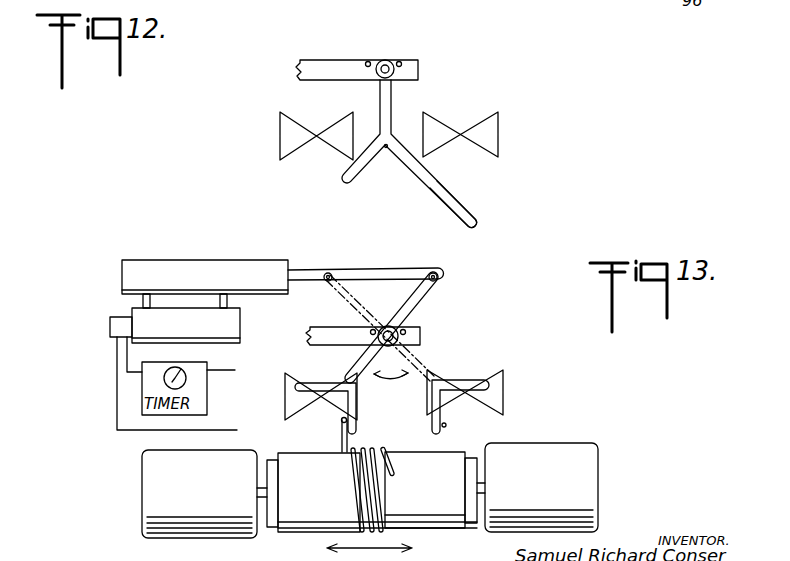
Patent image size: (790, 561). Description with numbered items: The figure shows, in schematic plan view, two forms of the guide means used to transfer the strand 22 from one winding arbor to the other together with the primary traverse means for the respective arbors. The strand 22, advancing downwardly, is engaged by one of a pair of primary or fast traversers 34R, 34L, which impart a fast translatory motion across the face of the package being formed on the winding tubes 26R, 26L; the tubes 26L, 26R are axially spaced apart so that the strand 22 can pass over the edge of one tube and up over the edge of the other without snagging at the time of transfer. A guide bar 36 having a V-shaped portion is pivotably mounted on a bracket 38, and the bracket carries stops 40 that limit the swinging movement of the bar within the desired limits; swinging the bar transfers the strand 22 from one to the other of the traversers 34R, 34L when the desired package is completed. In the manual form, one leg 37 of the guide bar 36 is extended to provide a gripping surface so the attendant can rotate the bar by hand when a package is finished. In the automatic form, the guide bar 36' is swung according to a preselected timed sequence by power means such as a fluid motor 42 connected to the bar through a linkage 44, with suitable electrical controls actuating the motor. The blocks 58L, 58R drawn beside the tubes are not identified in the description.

In FIG. 12, the strand 22 is at (386, 149).
In FIG. 13, the strand 22 is at (341, 423).
In FIG. 13, the tube 26L is at (337, 498).
In FIG. 13, the tube 26R is at (453, 498).
In FIG. 12, the primary traverser 34L is at (280, 130).
In FIG. 13, the primary traverser 34L is at (285, 392).
In FIG. 12, the primary traverser 34R is at (498, 134).
In FIG. 13, the primary traverser 34R is at (503, 388).
In FIG. 12, the guide bar 36 is at (427, 153).
In FIG. 13, the guide bar 36' is at (403, 353).
In FIG. 12, the leg 37 is at (458, 202).
In FIG. 12, the bracket 38 is at (296, 70).
In FIG. 13, the bracket 38 is at (306, 332).
In FIG. 12, the stops 40 is at (368, 61).
In FIG. 13, the stops 40 is at (370, 330).
In FIG. 13, the fluid motor 42 is at (186, 267).
In FIG. 13, the linkage 44 is at (365, 266).
In FIG. 13, the left switch unit 58L is at (205, 502).
In FIG. 13, the right switch unit 58R is at (550, 494).